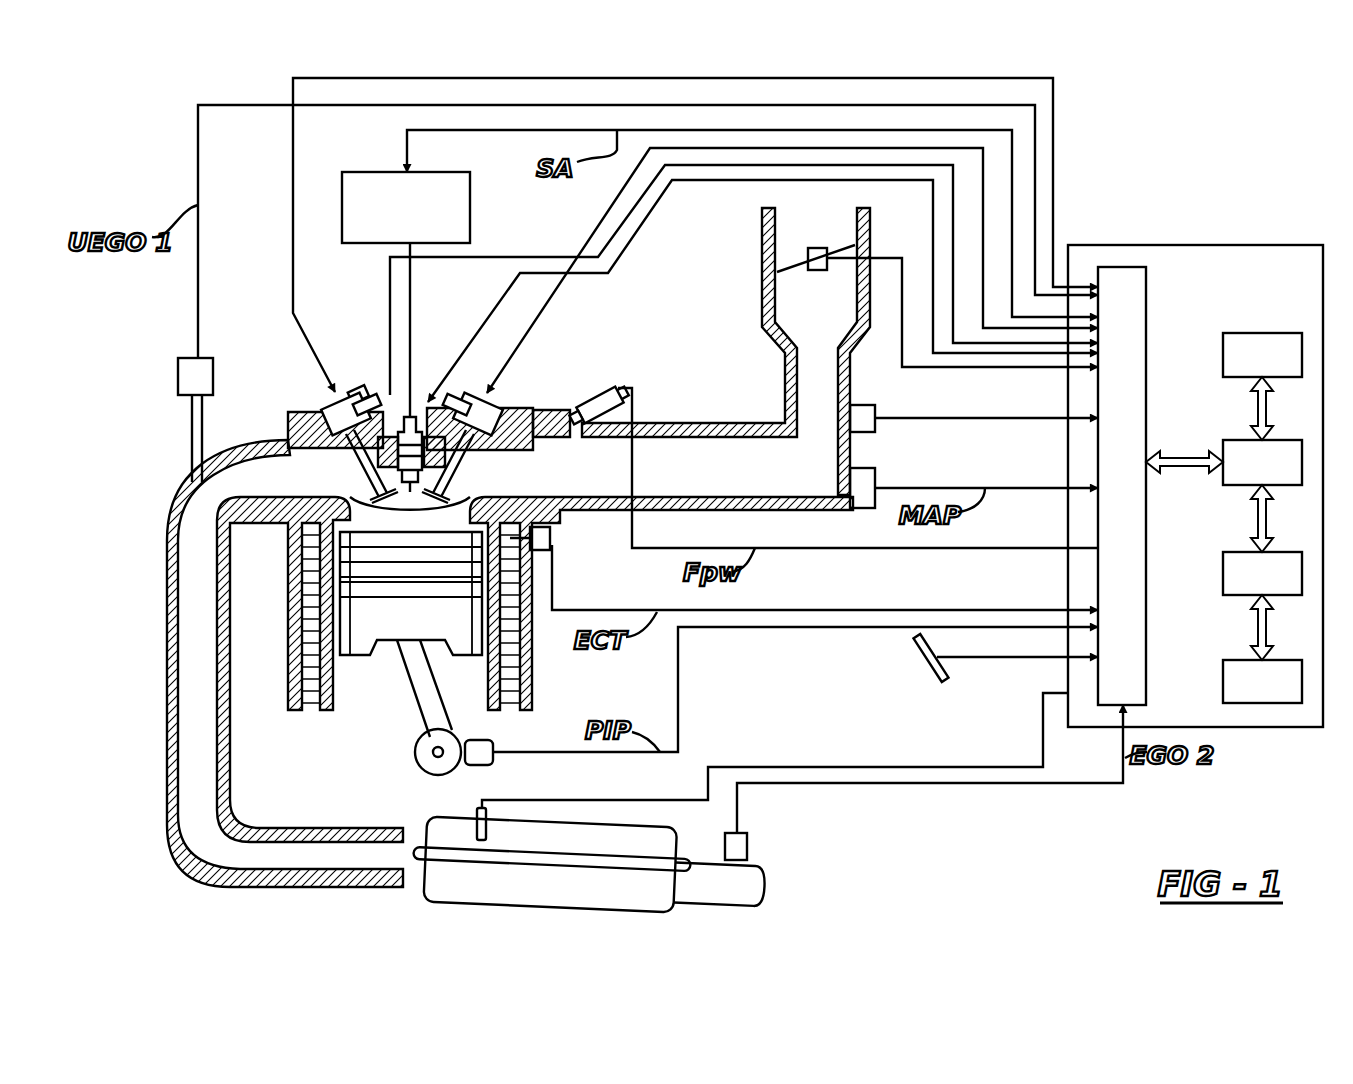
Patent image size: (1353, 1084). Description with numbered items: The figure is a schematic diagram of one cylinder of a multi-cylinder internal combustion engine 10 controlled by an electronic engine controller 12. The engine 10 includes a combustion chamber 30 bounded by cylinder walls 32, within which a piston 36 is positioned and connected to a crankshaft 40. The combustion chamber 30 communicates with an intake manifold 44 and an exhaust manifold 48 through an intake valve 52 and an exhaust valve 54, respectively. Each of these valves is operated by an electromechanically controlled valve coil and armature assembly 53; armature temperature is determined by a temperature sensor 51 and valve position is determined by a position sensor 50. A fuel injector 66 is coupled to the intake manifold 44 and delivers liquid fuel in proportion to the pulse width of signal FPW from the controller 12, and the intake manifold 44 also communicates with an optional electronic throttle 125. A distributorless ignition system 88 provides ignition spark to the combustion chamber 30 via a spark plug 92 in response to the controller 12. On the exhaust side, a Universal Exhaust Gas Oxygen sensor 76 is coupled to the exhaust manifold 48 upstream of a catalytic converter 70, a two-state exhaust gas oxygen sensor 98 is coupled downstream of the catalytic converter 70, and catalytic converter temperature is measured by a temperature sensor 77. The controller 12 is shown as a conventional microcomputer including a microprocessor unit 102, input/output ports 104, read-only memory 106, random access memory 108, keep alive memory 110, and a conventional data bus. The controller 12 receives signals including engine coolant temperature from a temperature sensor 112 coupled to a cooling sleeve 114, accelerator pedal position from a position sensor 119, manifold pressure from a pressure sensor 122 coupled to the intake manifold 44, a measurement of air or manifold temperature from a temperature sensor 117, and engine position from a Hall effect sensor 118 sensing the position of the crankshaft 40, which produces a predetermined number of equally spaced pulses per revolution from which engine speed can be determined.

The internal combustion engine 10 is at (283, 400).
The electronic engine controller 12 is at (1190, 245).
The combustion chamber 30 is at (410, 517).
The cylinder walls 32 is at (333, 693).
The piston 36 is at (405, 625).
The crankshaft 40 is at (415, 753).
The intake manifold 44 is at (785, 480).
The exhaust manifold 48 is at (197, 540).
The position sensor 50 is at (372, 390).
The temperature sensor 51 is at (467, 390).
The intake valve 52 is at (520, 480).
The valve coil and armature assembly 53 is at (335, 390).
The exhaust valve 54 is at (345, 490).
The fuel injector 66 is at (580, 390).
The catalytic converter 70 is at (500, 907).
The Universal Exhaust Gas Oxygen (UEGO) sensor 76 is at (178, 375).
The temperature sensor 77 is at (465, 830).
The distributorless ignition system 88 is at (470, 210).
The spark plug 92 is at (417, 402).
The two-state exhaust gas oxygen sensor 98 is at (752, 840).
The microprocessor unit 102 is at (1235, 440).
The input/output ports 104 is at (1146, 290).
The read-only memory 106 is at (1265, 333).
The random access memory 108 is at (1235, 552).
The keep alive memory 110 is at (1235, 660).
The temperature sensor 112 is at (547, 527).
The cooling sleeve 114 is at (310, 707).
The temperature sensor 117 is at (875, 412).
The Hall effect sensor 118 is at (482, 765).
The position sensor 119 is at (918, 670).
The pressure sensor 122 is at (878, 478).
The electronic throttle 125 is at (805, 255).